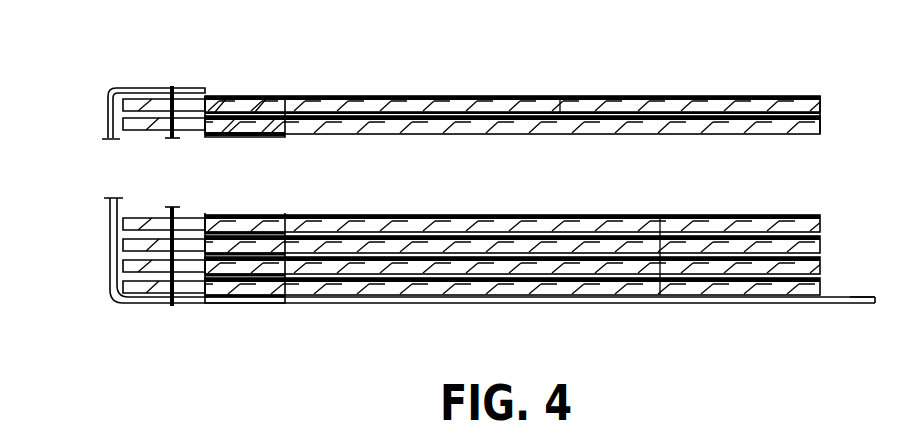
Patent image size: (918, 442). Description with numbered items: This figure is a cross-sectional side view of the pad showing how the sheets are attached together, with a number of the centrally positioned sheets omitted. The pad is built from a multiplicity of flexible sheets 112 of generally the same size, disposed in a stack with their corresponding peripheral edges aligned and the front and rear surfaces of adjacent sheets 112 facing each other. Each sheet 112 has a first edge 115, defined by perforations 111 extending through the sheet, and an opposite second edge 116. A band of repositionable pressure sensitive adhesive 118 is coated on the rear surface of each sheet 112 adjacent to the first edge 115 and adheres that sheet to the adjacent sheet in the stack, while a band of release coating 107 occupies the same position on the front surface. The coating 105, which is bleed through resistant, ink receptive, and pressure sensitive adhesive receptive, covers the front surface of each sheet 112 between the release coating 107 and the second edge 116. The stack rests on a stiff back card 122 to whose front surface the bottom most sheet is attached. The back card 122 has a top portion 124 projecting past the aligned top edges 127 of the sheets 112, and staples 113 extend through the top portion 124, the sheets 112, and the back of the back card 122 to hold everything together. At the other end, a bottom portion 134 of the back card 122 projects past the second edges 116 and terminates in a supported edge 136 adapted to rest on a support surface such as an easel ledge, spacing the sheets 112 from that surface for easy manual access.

The coating 105 is at (713, 96).
The band of release coating 107 is at (238, 132).
The perforations 111 is at (207, 128).
The flexible sheets 112 is at (575, 102).
The staples 113 is at (166, 112).
The first edge 115 is at (168, 294).
The second edge 116 is at (823, 125).
The band of repositionable pressure sensitive adhesive 118 is at (274, 240).
The back card 122 is at (110, 84).
The top portion 124 is at (147, 88).
The aligned top edges 127 is at (117, 127).
The bottom portion 134 is at (838, 305).
The supported edge 136 is at (876, 298).